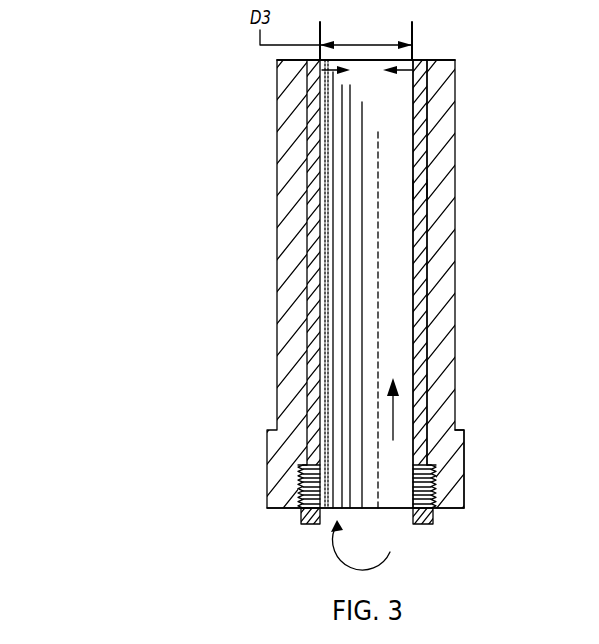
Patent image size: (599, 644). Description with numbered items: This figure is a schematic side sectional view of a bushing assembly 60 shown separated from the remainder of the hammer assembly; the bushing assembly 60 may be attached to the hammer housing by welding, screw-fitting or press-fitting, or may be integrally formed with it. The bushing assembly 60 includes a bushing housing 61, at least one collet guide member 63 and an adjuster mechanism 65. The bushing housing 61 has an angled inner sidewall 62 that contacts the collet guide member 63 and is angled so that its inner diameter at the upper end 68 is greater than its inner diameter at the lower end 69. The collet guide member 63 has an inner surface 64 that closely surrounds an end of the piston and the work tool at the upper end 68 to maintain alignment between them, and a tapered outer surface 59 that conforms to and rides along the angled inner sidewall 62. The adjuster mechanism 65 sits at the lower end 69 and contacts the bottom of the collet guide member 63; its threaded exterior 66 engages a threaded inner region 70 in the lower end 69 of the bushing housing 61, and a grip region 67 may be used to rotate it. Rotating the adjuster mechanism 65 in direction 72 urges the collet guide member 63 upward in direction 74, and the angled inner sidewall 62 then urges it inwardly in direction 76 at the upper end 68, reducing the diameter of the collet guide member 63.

The tapered outer surface 59 is at (436, 185).
The bushing assembly 60 is at (109, 36).
The bushing housing 61 is at (277, 163).
The angled inner sidewall 62 is at (436, 100).
The collet guide member 63 is at (427, 226).
The inner surface 64 is at (422, 294).
The adjuster mechanism 65 is at (446, 486).
The threaded exterior 66 is at (300, 490).
The grip region 67 is at (313, 524).
The upper end 68 is at (277, 61).
The lower end 69 is at (461, 508).
The threaded inner region 70 is at (302, 508).
The direction 72 is at (391, 553).
The direction 74 is at (393, 412).
The direction 76 is at (367, 70).